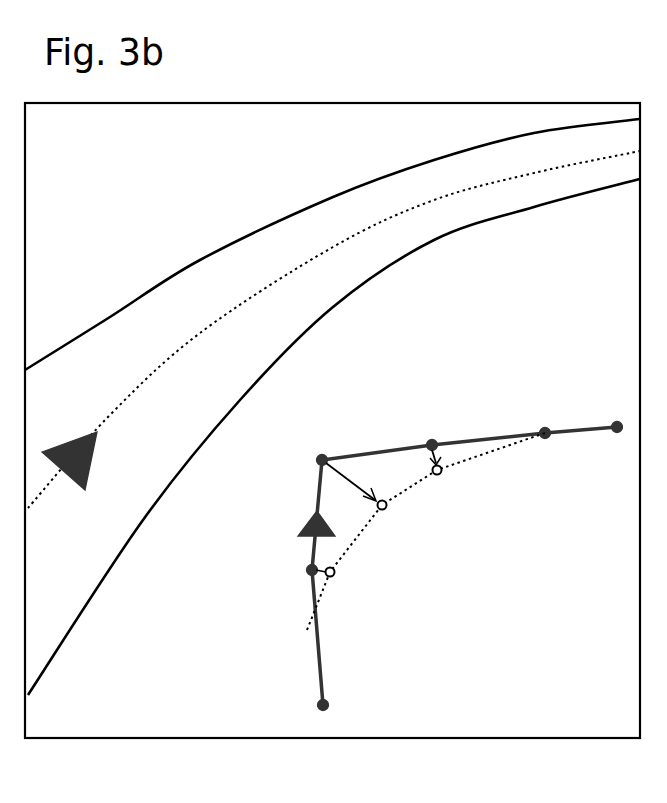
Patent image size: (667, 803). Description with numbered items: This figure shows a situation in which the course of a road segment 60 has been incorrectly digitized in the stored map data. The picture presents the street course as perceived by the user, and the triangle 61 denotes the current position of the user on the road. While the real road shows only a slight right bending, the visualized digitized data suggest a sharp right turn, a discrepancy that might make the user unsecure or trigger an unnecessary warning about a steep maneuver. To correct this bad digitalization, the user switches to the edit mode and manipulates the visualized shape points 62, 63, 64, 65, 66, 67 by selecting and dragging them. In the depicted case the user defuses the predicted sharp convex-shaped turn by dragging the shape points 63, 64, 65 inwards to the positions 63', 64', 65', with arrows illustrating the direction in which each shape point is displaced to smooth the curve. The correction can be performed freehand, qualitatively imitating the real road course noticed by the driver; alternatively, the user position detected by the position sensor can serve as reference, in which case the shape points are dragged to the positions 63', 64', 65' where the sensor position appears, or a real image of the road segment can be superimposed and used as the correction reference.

The road segment 60 is at (173, 301).
The triangle 61 is at (95, 472).
The shape point 62 is at (294, 700).
The shape point 63 is at (271, 577).
The shape point 64 is at (337, 422).
The shape point 65 is at (457, 419).
The shape point 66 is at (548, 428).
The shape point 67 is at (617, 422).
The corrected shape point position 63' is at (426, 531).
The corrected shape point position 64' is at (392, 515).
The corrected shape point position 65' is at (478, 487).